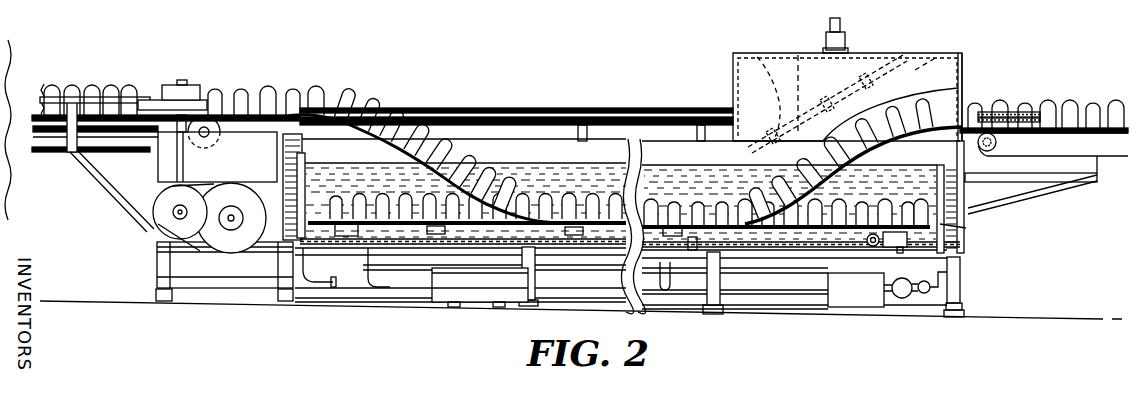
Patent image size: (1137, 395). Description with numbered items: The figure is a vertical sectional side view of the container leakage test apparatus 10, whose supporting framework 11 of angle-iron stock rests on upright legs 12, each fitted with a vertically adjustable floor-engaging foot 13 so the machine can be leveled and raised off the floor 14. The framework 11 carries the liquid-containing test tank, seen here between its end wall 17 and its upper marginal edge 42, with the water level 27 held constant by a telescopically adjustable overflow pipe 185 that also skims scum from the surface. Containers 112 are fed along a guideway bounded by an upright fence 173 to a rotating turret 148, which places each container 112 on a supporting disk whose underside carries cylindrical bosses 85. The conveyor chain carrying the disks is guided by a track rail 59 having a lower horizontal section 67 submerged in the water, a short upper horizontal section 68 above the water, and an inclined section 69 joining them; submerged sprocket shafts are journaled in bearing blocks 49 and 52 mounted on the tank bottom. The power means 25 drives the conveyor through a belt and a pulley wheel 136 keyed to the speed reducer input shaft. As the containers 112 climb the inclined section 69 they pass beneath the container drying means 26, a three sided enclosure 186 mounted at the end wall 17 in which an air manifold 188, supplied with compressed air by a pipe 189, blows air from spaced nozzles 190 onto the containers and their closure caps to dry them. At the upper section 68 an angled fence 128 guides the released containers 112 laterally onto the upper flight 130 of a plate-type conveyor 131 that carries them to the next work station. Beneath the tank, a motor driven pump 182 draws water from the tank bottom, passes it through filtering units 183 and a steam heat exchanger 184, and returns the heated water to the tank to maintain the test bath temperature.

The test apparatus 10 is at (413, 246).
The supporting framework 11 is at (148, 268).
The upright standards or legs 12 is at (957, 278).
The floor-engaging foot 13 is at (288, 302).
The floor 14 is at (1044, 318).
The end wall 17 is at (965, 187).
The power means 25 is at (150, 224).
The container drying means 26 is at (728, 82).
The water level 27 is at (528, 163).
The upper marginal edge 42 is at (670, 140).
The bearing block 49 is at (350, 237).
The bearing block 52 is at (902, 253).
The track rail 59 is at (757, 228).
The horizontal section 67 is at (818, 273).
The horizontal section 68 is at (278, 107).
The inclined section 69 is at (397, 127).
The cylindrical boss 85 is at (303, 165).
The container 112 is at (342, 100).
The fence 128 is at (1012, 110).
The upper flight 130 is at (1107, 110).
The plate-type conveyor 131 is at (1113, 166).
The pulley wheel 136 is at (220, 248).
The rotating turret 148 is at (197, 80).
The upright fence 173 is at (100, 98).
The motor driven pump 182 is at (857, 293).
The filtering unit 183 is at (902, 300).
The heat exchanger 184 is at (490, 289).
The overflow pipe 185 is at (967, 227).
The enclosure 186 is at (963, 72).
The air manifold 188 is at (797, 55).
The pipe 189 is at (846, 36).
The nozzle 190 is at (757, 57).